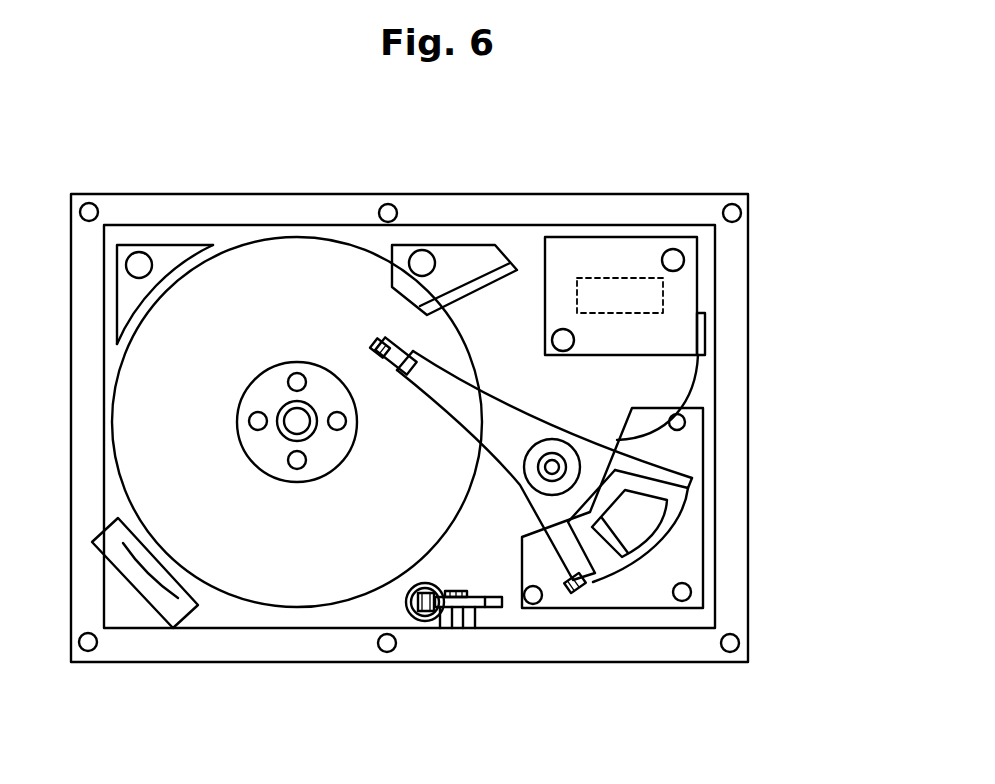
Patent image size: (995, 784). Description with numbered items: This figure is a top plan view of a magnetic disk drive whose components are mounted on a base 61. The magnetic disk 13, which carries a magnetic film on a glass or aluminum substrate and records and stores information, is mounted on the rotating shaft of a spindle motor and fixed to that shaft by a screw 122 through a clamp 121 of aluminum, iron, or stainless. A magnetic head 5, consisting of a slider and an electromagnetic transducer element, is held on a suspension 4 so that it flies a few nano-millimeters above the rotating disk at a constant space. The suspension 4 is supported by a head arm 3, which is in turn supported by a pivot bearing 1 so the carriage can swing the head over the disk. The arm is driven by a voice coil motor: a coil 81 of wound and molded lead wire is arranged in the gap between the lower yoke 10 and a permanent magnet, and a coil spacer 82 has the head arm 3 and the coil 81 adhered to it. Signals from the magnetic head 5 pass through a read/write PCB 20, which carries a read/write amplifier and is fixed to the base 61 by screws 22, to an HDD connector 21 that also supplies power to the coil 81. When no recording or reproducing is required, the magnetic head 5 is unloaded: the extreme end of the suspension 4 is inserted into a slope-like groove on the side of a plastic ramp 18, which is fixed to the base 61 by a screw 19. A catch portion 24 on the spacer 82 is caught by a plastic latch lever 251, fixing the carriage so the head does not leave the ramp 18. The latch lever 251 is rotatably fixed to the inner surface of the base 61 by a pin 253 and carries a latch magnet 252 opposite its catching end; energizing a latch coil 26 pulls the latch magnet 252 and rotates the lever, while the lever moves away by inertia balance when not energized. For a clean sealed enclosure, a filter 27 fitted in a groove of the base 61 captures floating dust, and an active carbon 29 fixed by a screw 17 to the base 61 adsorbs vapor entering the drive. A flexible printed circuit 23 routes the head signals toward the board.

The pivot bearing 1 is at (566, 481).
The head arm 3 is at (455, 400).
The suspension 4 is at (413, 351).
The magnetic head 5 is at (374, 343).
The lower yoke 10 is at (697, 527).
The magnetic disk 13 is at (273, 585).
The screw 17 is at (139, 264).
The ramp 18 is at (462, 255).
The screw 19 is at (422, 262).
The read/write PCB 20 is at (605, 255).
The HDD connector 21 is at (640, 283).
The screws 22 is at (574, 340).
The flexible printed circuit 23 is at (697, 381).
The catch portion 24 is at (578, 592).
The latch coil 26 is at (406, 604).
The filter 27 is at (157, 597).
The active carbon 29 is at (173, 250).
The base 61 is at (540, 214).
The coil 81 is at (645, 547).
The coil spacer 82 is at (697, 466).
The clamp 121 is at (263, 453).
The screw 122 is at (297, 420).
The latch lever 251 is at (460, 608).
The latch magnet 252 is at (427, 616).
The pin 253 is at (457, 591).